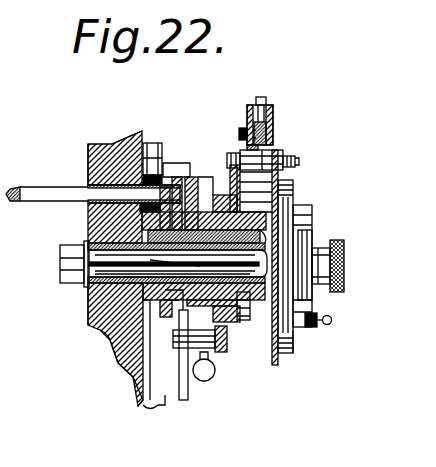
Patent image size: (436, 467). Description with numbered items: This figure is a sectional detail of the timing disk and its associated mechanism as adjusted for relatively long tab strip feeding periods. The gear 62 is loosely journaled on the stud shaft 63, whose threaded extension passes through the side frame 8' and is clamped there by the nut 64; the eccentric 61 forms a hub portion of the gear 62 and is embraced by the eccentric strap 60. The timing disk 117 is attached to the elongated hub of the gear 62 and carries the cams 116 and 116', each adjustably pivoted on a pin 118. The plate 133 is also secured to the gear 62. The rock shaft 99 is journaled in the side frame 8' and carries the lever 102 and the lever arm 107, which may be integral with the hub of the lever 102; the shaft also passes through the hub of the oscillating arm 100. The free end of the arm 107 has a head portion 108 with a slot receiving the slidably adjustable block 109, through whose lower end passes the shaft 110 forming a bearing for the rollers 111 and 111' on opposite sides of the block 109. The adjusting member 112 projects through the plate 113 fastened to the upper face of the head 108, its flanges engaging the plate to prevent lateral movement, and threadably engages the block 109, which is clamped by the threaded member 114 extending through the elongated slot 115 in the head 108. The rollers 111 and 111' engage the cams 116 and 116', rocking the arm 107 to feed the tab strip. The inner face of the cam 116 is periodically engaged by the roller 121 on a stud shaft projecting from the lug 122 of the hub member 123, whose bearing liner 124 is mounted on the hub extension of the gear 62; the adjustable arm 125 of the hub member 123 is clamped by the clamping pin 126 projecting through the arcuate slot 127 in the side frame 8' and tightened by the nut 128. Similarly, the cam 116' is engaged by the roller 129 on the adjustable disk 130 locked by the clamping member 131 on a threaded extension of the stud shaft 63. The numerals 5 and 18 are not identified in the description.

The side frame 8' is at (100, 182).
The lever 102 is at (120, 138).
The lever arm 107 is at (178, 165).
The cam 116 is at (208, 123).
The roller 111 is at (244, 124).
The threaded member 114 is at (243, 128).
The elongated slot 115 is at (250, 130).
The adjusting member 112 is at (258, 105).
The plate 113 is at (270, 112).
The head portion 108 is at (273, 120).
The roller 111' is at (314, 141).
The shaft 110 is at (297, 159).
The block 109 is at (262, 172).
The bearing liner 124 is at (278, 210).
The roller 129 is at (306, 203).
The roller 121 is at (240, 156).
The plate 133 is at (198, 167).
The lug 122 is at (206, 218).
The rock shaft 99 is at (46, 199).
The stud shaft 63 is at (135, 247).
The shaft end 18 is at (44, 263).
The nut 64 is at (75, 284).
The eccentric strap 60 is at (100, 330).
The gear 62 is at (118, 346).
The eccentric 61 is at (128, 368).
The clamping pin 126 is at (178, 350).
The arcuate slot 127 is at (184, 372).
The nut 128 is at (222, 352).
The adjustable arm 125 is at (204, 381).
The hub member 123 is at (226, 312).
The timing disk 117 is at (274, 355).
The cam 116' is at (320, 360).
The pin 118 is at (297, 323).
The adjustable plate or disk 130 is at (312, 303).
The clamping member 131 is at (341, 262).
The frame 5 is at (44, 341).
The oscillating arm 100 is at (71, 433).